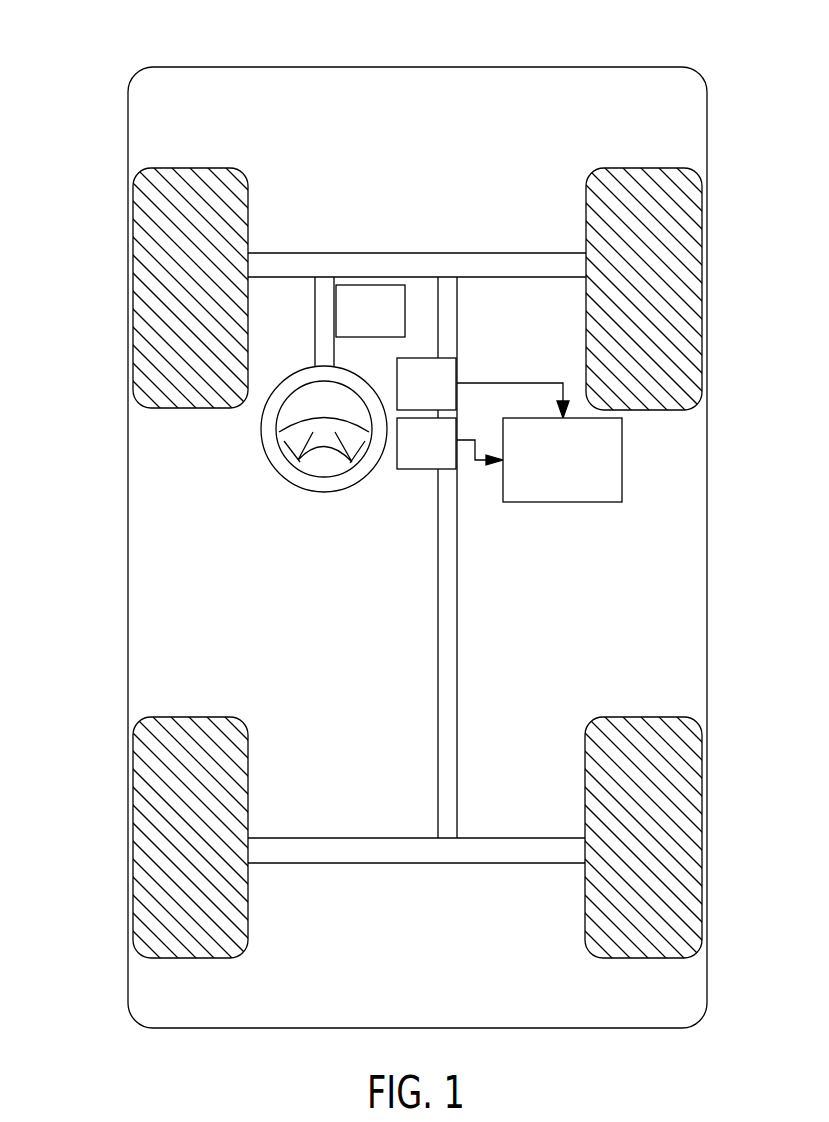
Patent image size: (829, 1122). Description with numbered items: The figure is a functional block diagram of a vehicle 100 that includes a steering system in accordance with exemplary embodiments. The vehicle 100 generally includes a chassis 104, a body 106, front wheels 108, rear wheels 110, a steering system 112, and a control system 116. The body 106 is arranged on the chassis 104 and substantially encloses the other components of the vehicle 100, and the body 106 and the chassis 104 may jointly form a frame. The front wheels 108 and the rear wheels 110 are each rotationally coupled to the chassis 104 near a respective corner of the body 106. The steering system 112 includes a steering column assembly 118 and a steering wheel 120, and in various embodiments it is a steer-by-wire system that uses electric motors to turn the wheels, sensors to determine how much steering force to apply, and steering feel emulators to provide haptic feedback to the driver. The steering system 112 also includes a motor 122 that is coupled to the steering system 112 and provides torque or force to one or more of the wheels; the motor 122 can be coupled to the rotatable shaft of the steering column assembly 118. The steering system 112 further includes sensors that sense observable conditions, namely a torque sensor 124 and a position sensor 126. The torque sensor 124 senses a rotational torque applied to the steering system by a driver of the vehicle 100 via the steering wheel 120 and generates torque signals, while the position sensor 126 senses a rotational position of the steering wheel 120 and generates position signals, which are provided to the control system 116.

The vehicle 100 is at (420, 67).
The chassis 104 is at (458, 605).
The body 106 is at (127, 508).
The front wheels 108 is at (190, 168).
The rear wheels 110 is at (189, 717).
The steering system 112 is at (337, 224).
The control system 116 is at (546, 476).
The steering column assembly 118 is at (315, 362).
The steering wheel 120 is at (263, 447).
The motor 122 is at (351, 325).
The torque sensor 124 is at (411, 397).
The position sensor 126 is at (411, 457).